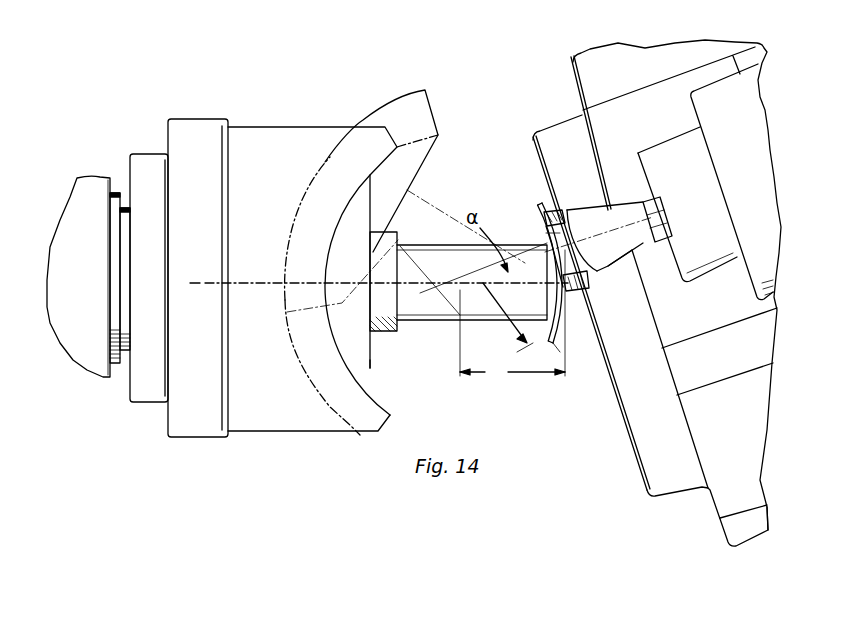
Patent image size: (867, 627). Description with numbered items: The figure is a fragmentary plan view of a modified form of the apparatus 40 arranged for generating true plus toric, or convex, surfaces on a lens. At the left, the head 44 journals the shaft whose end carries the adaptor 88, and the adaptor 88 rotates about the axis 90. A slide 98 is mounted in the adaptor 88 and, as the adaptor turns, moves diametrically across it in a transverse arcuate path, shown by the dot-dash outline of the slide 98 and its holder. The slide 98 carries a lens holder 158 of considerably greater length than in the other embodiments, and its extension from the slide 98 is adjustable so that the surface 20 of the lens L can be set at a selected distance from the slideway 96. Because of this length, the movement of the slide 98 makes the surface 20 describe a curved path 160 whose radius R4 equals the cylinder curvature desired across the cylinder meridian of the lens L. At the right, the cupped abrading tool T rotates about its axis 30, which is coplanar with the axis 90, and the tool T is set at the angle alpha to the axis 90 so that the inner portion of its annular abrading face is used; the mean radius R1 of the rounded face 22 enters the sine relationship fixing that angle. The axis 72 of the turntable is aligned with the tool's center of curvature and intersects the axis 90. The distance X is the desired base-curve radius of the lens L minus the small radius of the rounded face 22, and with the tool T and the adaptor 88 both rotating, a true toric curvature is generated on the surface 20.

The apparatus 40 is at (147, 124).
The head 44 is at (74, 207).
The adaptor 88 is at (300, 123).
The axis 90 is at (213, 283).
The slideway 96 is at (296, 338).
The slide 98 is at (371, 362).
The lens holder 158 is at (438, 330).
The curved path 160 is at (541, 213).
The rounded face 22 is at (560, 300).
The surface 20 is at (560, 338).
The axis 30 is at (670, 213).
The axis 72 is at (584, 291).
The tool T is at (600, 209).
The distance x X is at (512, 318).
The mean radius R1 is at (546, 233).
The radius of curvature R4 is at (499, 323).
The lens L is at (555, 357).